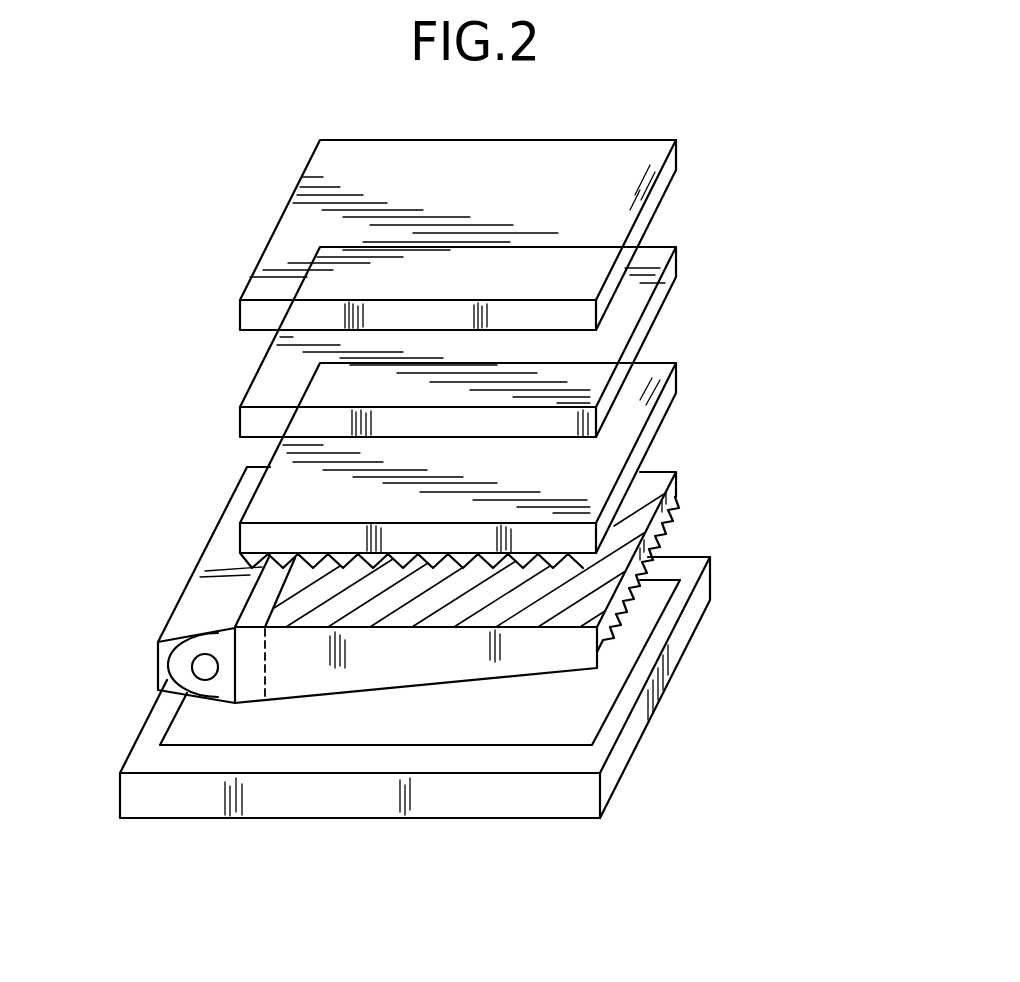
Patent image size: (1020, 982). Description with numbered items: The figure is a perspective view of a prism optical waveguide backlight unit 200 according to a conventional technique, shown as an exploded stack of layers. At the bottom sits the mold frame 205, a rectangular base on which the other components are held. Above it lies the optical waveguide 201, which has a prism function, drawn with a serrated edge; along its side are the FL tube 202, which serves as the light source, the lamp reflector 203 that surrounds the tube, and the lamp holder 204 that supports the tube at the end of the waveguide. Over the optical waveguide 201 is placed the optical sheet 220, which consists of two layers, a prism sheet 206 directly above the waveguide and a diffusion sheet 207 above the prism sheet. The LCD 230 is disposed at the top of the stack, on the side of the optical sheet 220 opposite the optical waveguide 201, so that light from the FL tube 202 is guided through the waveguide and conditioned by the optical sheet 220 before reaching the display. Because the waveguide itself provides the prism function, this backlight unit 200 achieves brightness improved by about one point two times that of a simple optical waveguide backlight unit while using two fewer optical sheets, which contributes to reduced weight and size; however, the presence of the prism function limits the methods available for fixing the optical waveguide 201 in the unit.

The backlight unit 200 is at (795, 258).
The optical waveguide 201 is at (680, 476).
The FL tube 202 is at (203, 652).
The lamp reflector 203 is at (177, 636).
The lamp holder 204 is at (157, 665).
The mold frame 205 is at (687, 660).
The prism sheet 206 is at (273, 453).
The diffusion sheet 207 is at (248, 368).
The optical sheet 220 is at (703, 283).
The LCD 230 is at (678, 147).